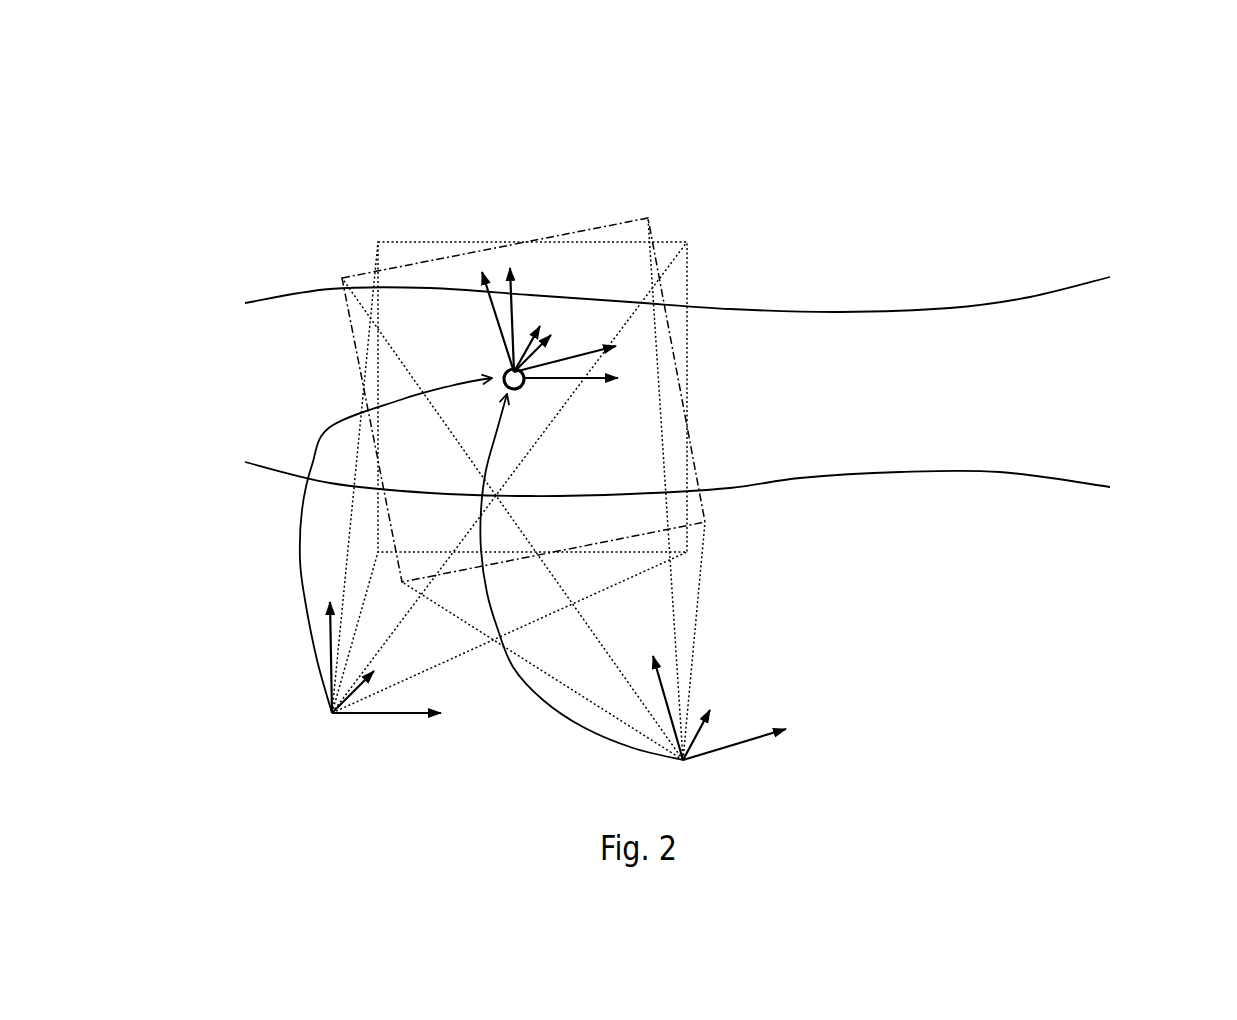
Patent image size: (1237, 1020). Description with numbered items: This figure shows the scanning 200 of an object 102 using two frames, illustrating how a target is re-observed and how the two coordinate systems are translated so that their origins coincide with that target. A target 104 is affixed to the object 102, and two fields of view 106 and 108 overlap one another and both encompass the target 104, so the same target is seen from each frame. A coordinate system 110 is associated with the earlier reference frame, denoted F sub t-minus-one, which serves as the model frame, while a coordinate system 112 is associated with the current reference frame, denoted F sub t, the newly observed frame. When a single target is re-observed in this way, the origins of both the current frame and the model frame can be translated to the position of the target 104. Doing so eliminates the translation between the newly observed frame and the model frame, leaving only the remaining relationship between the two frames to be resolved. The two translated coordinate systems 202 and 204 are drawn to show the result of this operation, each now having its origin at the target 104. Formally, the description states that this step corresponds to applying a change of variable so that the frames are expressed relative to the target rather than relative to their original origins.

The visual odometry scene diagram 200 is at (562, 122).
The object 102 is at (1053, 410).
The target 104 is at (527, 382).
The field of view 106 is at (687, 237).
The field of view 108 is at (693, 457).
The coordinate system 110 is at (330, 713).
The coordinate system 112 is at (713, 707).
The translated coordinate system 202 is at (513, 282).
The translated coordinate system 204 is at (493, 320).